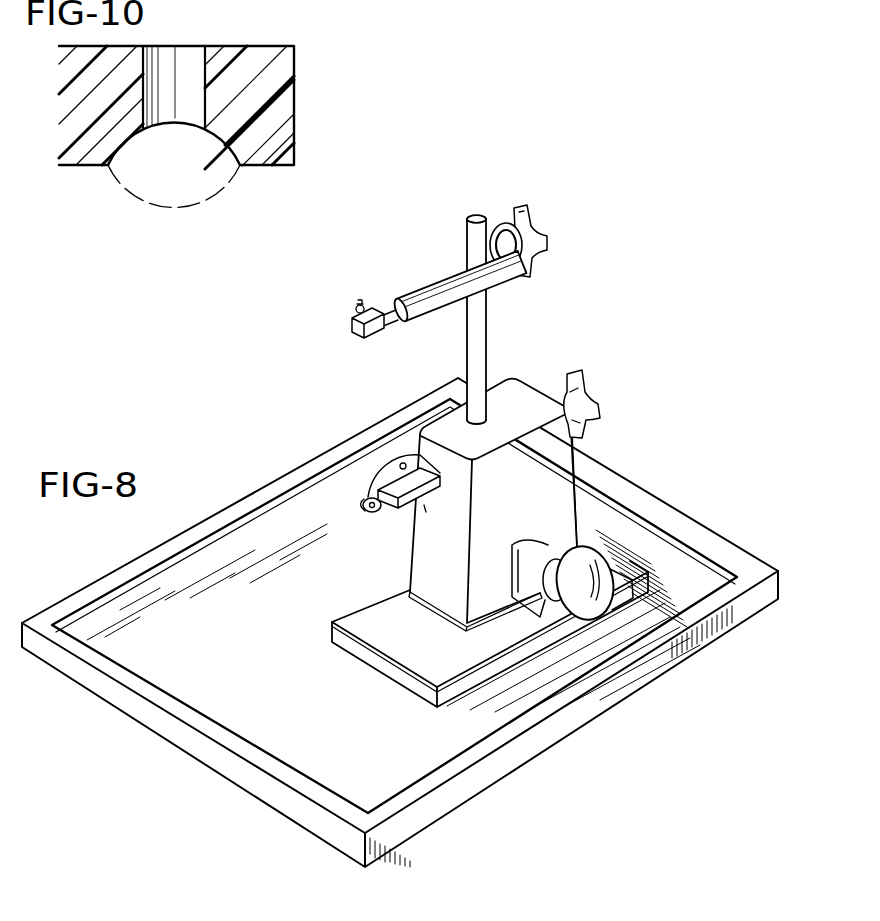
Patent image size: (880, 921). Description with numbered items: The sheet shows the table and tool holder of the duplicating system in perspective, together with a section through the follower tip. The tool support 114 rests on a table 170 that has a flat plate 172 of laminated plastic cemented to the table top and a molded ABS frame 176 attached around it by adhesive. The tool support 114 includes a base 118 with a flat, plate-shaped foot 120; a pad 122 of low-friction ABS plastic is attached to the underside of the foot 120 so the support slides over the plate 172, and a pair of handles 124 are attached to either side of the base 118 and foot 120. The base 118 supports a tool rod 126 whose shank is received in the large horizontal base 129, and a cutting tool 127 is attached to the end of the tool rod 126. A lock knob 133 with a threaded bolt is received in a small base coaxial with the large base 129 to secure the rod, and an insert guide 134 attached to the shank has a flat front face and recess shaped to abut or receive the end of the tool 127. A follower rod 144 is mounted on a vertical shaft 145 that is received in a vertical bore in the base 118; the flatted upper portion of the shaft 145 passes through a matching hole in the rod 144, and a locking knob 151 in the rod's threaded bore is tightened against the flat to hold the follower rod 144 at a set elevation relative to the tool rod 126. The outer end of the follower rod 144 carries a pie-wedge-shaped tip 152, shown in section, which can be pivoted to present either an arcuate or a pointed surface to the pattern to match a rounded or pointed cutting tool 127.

In FIG. 8, the tool support 114 is at (580, 449).
In FIG. 8, the base 118 is at (522, 385).
In FIG. 8, the foot 120 is at (425, 643).
In FIG. 8, the pad 122 is at (396, 682).
In FIG. 8, the handles 124 is at (586, 610).
In FIG. 8, the tool rod 126 is at (433, 483).
In FIG. 8, the cutting tool 127 is at (390, 519).
In FIG. 8, the large horizontal base 129 is at (377, 489).
In FIG. 8, the lock knob 133 is at (590, 380).
In FIG. 8, the insert guide 134 is at (424, 505).
In FIG. 10, the follower rod 144 is at (247, 177).
In FIG. 8, the follower rod 144 is at (432, 312).
In FIG. 8, the vertical shaft 145 is at (492, 317).
In FIG. 8, the locking knob 151 is at (548, 238).
In FIG. 10, the tip 152 is at (294, 94).
In FIG. 8, the tip 152 is at (351, 327).
In FIG. 8, the table 170 is at (233, 756).
In FIG. 8, the flat plate 172 is at (292, 676).
In FIG. 8, the frame 176 is at (490, 772).